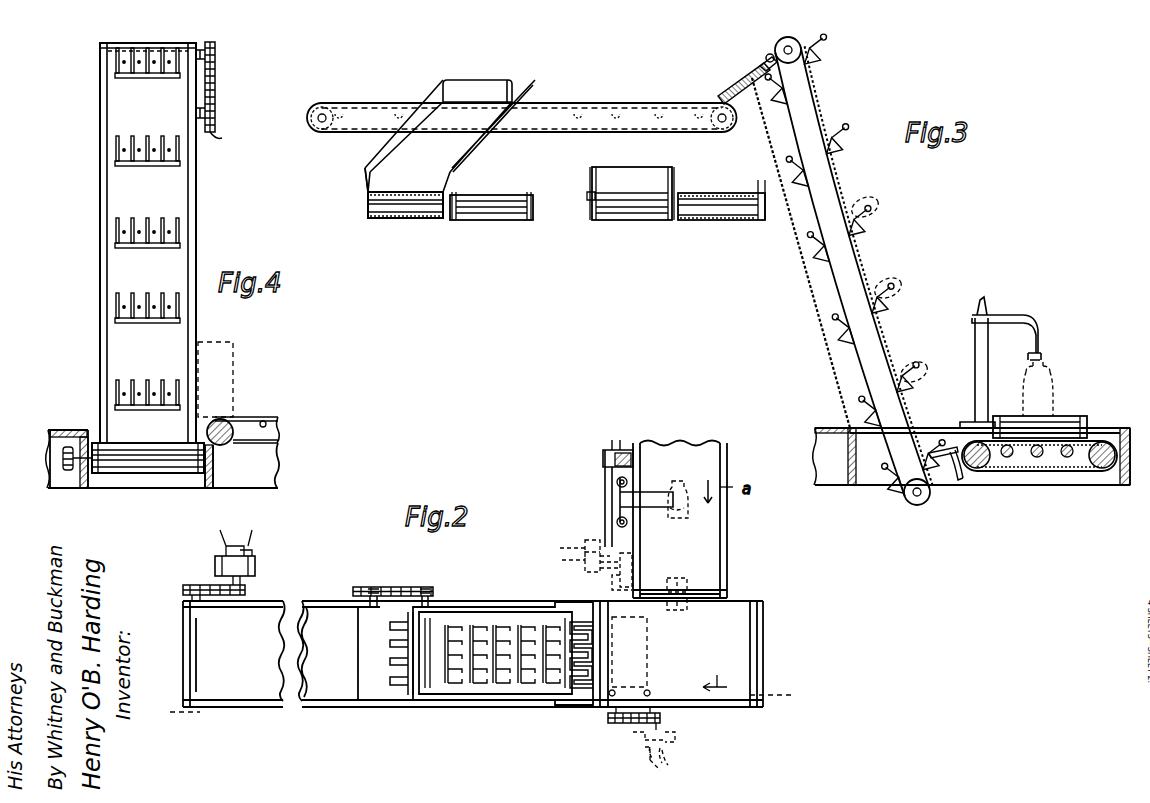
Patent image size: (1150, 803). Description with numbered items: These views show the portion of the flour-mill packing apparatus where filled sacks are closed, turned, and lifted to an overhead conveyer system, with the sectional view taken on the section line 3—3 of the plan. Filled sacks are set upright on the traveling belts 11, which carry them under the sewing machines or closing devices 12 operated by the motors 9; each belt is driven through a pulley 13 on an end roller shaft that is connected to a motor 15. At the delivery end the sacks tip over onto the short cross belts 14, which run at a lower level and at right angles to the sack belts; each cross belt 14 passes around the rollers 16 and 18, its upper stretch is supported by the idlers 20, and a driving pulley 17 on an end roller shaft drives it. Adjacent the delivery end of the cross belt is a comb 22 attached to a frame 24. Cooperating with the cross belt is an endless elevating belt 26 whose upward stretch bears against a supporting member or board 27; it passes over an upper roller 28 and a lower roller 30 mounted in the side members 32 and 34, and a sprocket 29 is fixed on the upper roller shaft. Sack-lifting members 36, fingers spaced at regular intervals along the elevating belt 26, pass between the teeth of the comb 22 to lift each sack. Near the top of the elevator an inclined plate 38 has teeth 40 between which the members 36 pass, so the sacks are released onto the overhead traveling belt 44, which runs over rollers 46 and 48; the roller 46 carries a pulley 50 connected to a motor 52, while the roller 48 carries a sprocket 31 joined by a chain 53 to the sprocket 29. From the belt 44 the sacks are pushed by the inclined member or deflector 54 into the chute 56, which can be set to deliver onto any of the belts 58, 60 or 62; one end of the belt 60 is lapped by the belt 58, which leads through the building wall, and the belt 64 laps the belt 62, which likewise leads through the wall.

In FIG. 2, the section line 3— 3 is at (479, 704).
In FIG. 2, the motor 9 is at (614, 468).
In FIG. 4, the traveling belt 11 is at (248, 418).
In FIG. 3, the traveling belt 11 is at (1058, 420).
In FIG. 2, the traveling belt 11 is at (706, 466).
In FIG. 3, the sewing machine or closing device 12 is at (1028, 318).
In FIG. 2, the sewing machine or closing device 12 is at (650, 494).
In FIG. 2, the pulley 13 is at (620, 583).
In FIG. 4, the cross belt 14 is at (144, 452).
In FIG. 3, the cross belt 14 is at (1096, 445).
In FIG. 2, the cross belt 14 is at (703, 696).
In FIG. 2, the motor 15 is at (585, 545).
In FIG. 3, the roller 16 is at (984, 470).
In FIG. 4, the driving pulley 17 is at (62, 458).
In FIG. 2, the driving pulley 17 is at (615, 724).
In FIG. 3, the roller 18 is at (1100, 470).
In FIG. 3, the idler 20 is at (1066, 460).
In FIG. 3, the comb 22 is at (932, 452).
In FIG. 2, the comb 22 is at (580, 690).
In FIG. 3, the frame 24 is at (952, 482).
In FIG. 4, the endless elevating belt 26 is at (130, 260).
In FIG. 3, the endless elevating belt 26 is at (868, 262).
In FIG. 2, the endless elevating belt 26 is at (448, 612).
In FIG. 3, the supporting member or board 27 is at (882, 336).
In FIG. 3, the upper roller 28 is at (803, 44).
In FIG. 4, the sprocket 29 is at (214, 52).
In FIG. 2, the sprocket 29 is at (426, 588).
In FIG. 3, the lower roller 30 is at (913, 505).
In FIG. 4, the sprocket 31 is at (222, 138).
In FIG. 2, the sprocket 31 is at (370, 588).
In FIG. 4, the side member 32 is at (104, 313).
In FIG. 2, the side member 32 is at (492, 702).
In FIG. 4, the side member 34 is at (196, 228).
In FIG. 2, the side member 34 is at (486, 612).
In FIG. 4, the sack-lifting member 36 is at (118, 205).
In FIG. 3, the sack-lifting member 36 is at (838, 128).
In FIG. 2, the sack-lifting member 36 is at (508, 624).
In FIG. 3, the inclined plate 38 is at (734, 86).
In FIG. 2, the inclined plate 38 is at (392, 650).
In FIG. 3, the teeth 40 is at (762, 66).
In FIG. 2, the teeth 40 is at (395, 647).
In FIG. 3, the traveling belt 44 is at (594, 103).
In FIG. 2, the traveling belt 44 is at (237, 696).
In FIG. 3, the roller 46 is at (319, 130).
In FIG. 3, the roller 48 is at (716, 110).
In FIG. 2, the pulley 50 is at (183, 586).
In FIG. 2, the motor 52 is at (250, 558).
In FIG. 4, the chain 53 is at (219, 85).
In FIG. 3, the chain 53 is at (770, 54).
In FIG. 2, the chain 53 is at (392, 587).
In FIG. 3, the inclined member or deflector 54 is at (478, 88).
In FIG. 3, the chute 56 is at (368, 176).
In FIG. 3, the belt 58 is at (386, 222).
In FIG. 3, the belt 60 is at (490, 215).
In FIG. 3, the belt 62 is at (726, 213).
In FIG. 3, the belt 64 is at (627, 210).